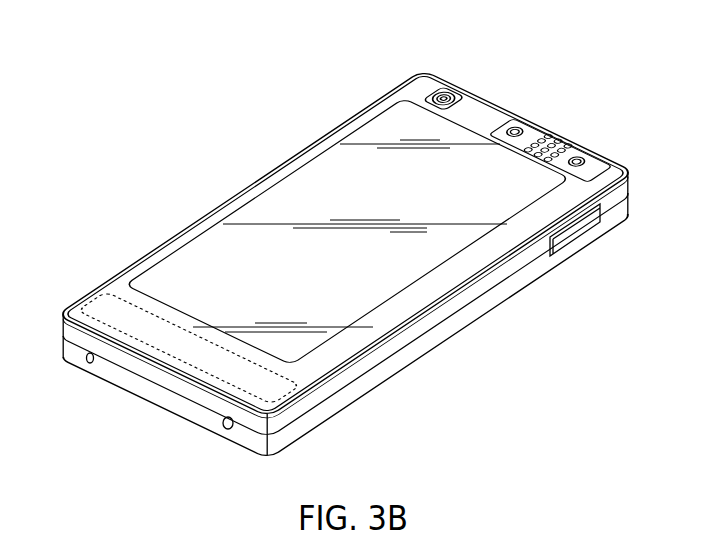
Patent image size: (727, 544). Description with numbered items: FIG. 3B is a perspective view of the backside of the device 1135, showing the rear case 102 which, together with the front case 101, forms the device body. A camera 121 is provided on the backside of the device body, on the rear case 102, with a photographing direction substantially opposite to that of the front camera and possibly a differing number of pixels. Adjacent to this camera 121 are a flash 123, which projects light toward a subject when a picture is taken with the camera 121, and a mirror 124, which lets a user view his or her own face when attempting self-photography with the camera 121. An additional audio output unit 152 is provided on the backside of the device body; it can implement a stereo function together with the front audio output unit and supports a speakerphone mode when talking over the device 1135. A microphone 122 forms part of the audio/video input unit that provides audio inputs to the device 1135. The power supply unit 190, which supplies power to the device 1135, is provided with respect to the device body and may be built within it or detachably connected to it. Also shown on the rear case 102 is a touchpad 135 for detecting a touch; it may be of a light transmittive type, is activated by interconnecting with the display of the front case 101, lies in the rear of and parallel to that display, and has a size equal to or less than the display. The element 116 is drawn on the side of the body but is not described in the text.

The mobile terminal 1135 is at (271, 104).
The camera 152 is at (450, 94).
The first manipulation unit 121 is at (521, 131).
The keypad 123 is at (556, 138).
The second manipulation unit 124 is at (576, 160).
The front case 102 is at (630, 183).
The rear case 101 is at (630, 205).
The display unit 135 is at (285, 200).
The antenna region 190 is at (92, 300).
The microphone 122 is at (89, 363).
The interface port 116 is at (227, 429).